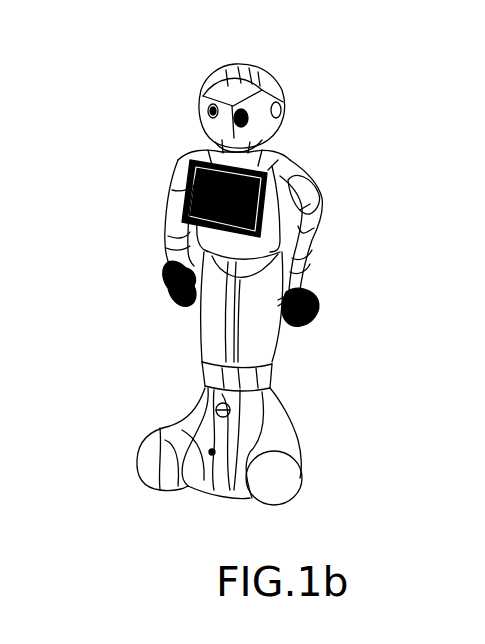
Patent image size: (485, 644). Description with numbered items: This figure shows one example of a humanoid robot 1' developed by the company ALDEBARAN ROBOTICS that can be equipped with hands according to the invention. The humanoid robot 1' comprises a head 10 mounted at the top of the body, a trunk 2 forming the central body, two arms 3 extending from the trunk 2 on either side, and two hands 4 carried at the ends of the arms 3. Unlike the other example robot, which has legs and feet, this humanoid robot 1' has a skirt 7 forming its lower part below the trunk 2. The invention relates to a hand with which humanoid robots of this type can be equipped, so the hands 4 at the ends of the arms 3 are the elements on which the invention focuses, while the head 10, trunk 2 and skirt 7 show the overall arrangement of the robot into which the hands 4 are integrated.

The humanoid robot 1' is at (234, 265).
The head 10 is at (262, 67).
The trunk 2 is at (280, 140).
The arms 3 is at (317, 203).
The hands 4 is at (317, 290).
The skirt 7 is at (268, 384).